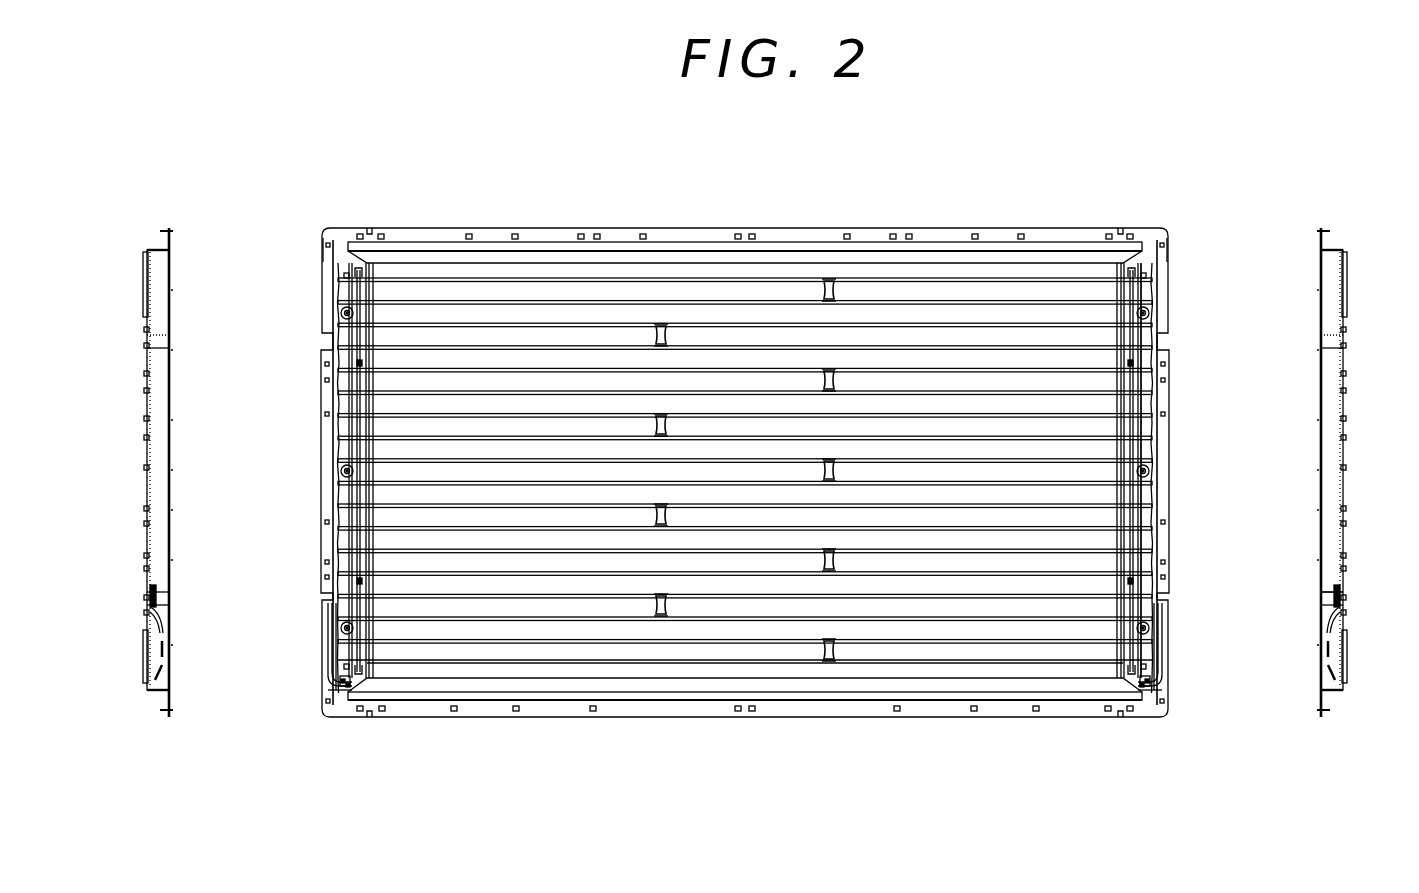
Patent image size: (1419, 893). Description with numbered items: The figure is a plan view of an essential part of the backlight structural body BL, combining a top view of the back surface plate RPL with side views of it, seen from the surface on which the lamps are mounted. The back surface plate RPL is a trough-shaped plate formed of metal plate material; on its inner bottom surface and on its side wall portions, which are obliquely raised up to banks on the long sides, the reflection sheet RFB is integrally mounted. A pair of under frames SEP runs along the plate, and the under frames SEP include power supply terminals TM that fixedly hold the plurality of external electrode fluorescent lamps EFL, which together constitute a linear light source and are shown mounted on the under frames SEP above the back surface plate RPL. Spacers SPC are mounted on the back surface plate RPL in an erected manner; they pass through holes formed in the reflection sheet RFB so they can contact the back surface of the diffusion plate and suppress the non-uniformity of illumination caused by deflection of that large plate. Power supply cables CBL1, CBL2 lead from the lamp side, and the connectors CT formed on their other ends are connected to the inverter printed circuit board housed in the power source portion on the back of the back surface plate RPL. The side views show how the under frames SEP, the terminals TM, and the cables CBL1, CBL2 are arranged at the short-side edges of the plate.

The backlight structural body BL is at (446, 227).
The back surface plate RPL is at (1063, 237).
The reflection sheet RFB is at (668, 290).
The under frame SEP is at (345, 286).
The power supply terminal TM is at (1145, 433).
The connector CT is at (1325, 598).
The power supply cable CBL1 is at (168, 621).
The power supply cable CBL2 is at (170, 668).
The spacer SPC is at (827, 662).
The external electrode fluorescent lamp EFL is at (1088, 662).